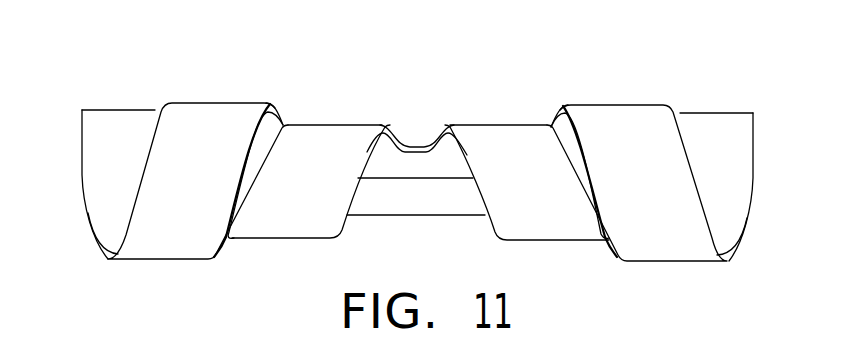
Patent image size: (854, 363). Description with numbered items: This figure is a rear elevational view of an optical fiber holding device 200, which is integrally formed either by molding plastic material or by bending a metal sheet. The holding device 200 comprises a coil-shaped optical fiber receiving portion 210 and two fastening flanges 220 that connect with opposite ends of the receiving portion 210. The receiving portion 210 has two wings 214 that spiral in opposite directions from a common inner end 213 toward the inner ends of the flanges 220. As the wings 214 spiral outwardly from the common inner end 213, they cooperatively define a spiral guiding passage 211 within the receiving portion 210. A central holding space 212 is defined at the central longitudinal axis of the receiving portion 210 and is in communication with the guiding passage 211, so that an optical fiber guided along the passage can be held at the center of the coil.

The optical fiber holding device 200 is at (95, 30).
The optical fiber receiving portion 210 is at (473, 115).
The spiral guiding passage 211 is at (582, 173).
The central holding space 212 is at (388, 160).
The common inner end 213 is at (450, 192).
The wings 214 is at (212, 130).
The fastening flanges 220 is at (698, 112).